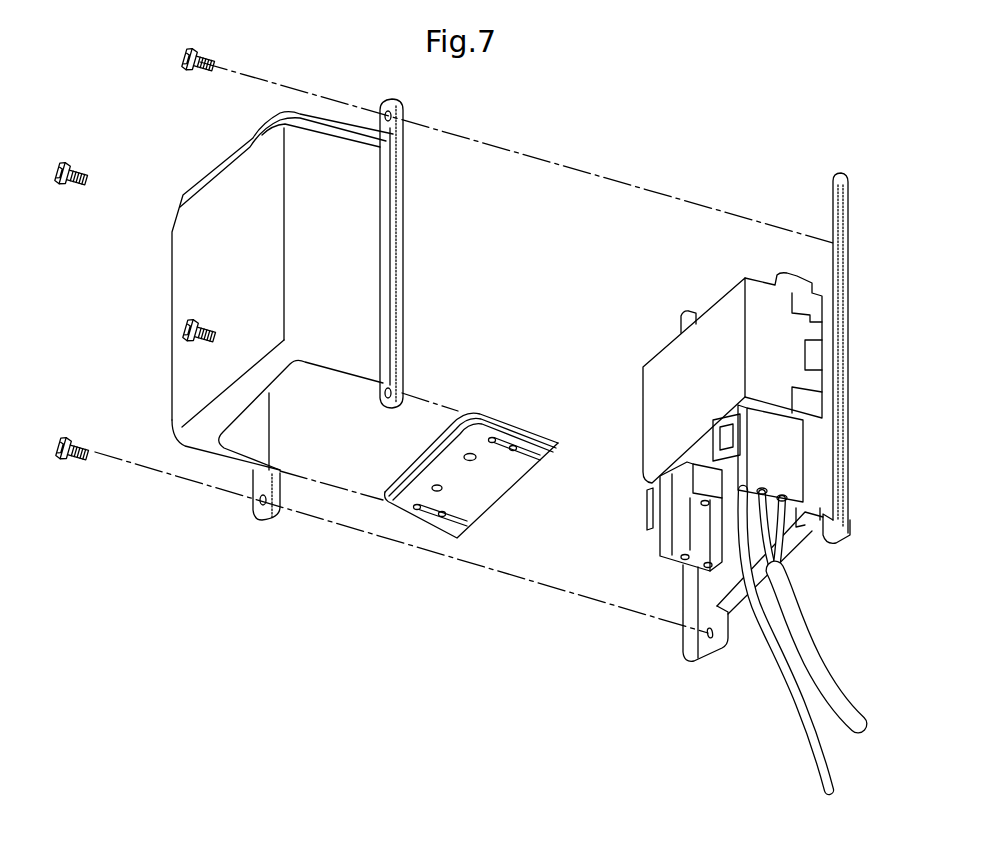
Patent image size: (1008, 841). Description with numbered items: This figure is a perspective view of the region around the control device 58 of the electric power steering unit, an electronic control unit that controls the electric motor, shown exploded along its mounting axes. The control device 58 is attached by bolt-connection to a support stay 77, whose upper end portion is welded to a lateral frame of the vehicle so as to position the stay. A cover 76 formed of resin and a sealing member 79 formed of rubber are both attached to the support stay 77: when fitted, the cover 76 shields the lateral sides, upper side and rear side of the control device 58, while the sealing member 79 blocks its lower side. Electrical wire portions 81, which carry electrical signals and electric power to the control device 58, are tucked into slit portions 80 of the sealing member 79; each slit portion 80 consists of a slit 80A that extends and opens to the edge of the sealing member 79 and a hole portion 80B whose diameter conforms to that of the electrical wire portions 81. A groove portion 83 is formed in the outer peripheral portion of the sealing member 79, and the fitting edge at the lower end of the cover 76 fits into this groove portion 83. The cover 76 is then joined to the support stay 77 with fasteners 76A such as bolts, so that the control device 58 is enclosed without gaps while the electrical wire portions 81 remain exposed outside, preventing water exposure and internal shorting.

The control device 58 is at (683, 352).
The cover 76 is at (340, 224).
The fasteners 76A is at (182, 62).
The support stay 77 is at (836, 346).
The sealing member 79 is at (489, 549).
The slit portion 80 is at (484, 464).
The slit 80A is at (442, 491).
The hole portion 80B is at (464, 456).
The electrical wire portions 81 is at (824, 683).
The groove portion 83 is at (527, 426).